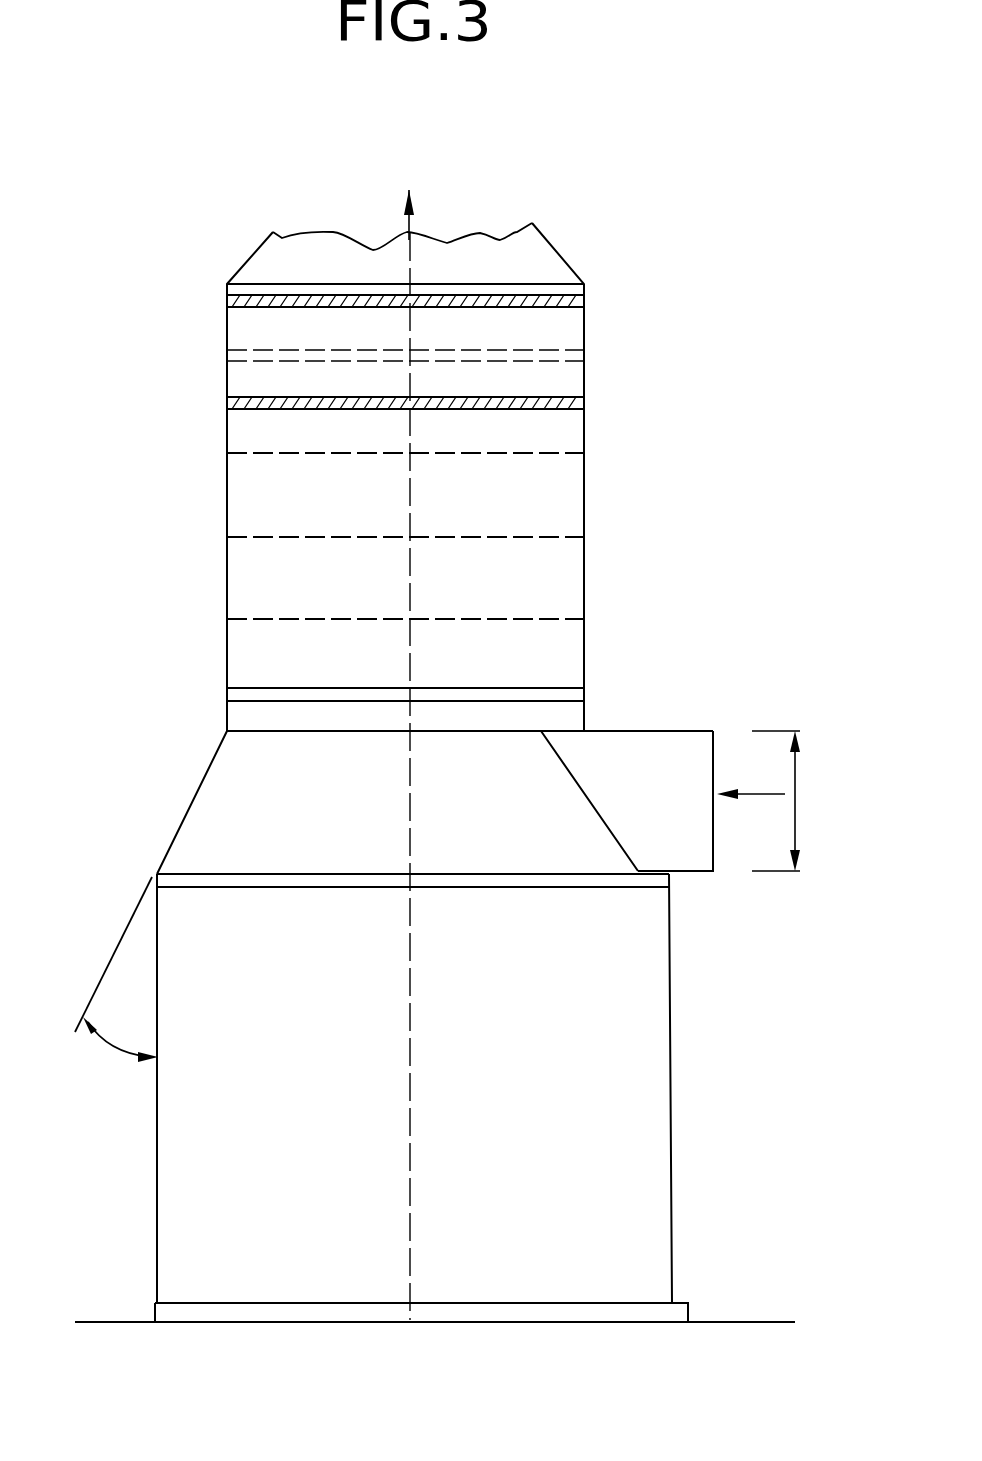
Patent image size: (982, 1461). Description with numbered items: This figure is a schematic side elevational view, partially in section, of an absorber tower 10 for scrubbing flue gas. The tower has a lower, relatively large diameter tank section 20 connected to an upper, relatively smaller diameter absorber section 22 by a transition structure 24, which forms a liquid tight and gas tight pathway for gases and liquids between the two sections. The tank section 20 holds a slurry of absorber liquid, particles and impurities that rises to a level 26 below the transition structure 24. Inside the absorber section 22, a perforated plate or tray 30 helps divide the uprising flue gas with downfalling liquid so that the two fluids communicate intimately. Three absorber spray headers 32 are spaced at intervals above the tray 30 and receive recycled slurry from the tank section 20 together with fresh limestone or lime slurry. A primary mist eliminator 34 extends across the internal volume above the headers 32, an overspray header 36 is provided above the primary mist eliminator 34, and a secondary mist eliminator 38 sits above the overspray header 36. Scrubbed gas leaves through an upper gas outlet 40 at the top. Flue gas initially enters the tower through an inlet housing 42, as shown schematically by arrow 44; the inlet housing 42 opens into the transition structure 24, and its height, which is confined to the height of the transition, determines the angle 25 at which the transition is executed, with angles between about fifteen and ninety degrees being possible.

The absorber tower 10 is at (658, 427).
The tank section 20 is at (673, 1195).
The absorber section 22 is at (585, 575).
The transition structure 24 is at (182, 807).
The transition angle 25 is at (127, 1054).
The slurry level 26 is at (562, 888).
The perforated plate or tray 30 is at (584, 693).
The absorber spray headers 32 is at (533, 453).
The primary mist eliminator 34 is at (273, 409).
The overspray header 36 is at (560, 346).
The secondary mist eliminator 38 is at (566, 268).
The upper gas outlet 40 is at (410, 226).
The inlet housing 42 is at (700, 742).
The flue gas inlet arrow 44 is at (753, 792).